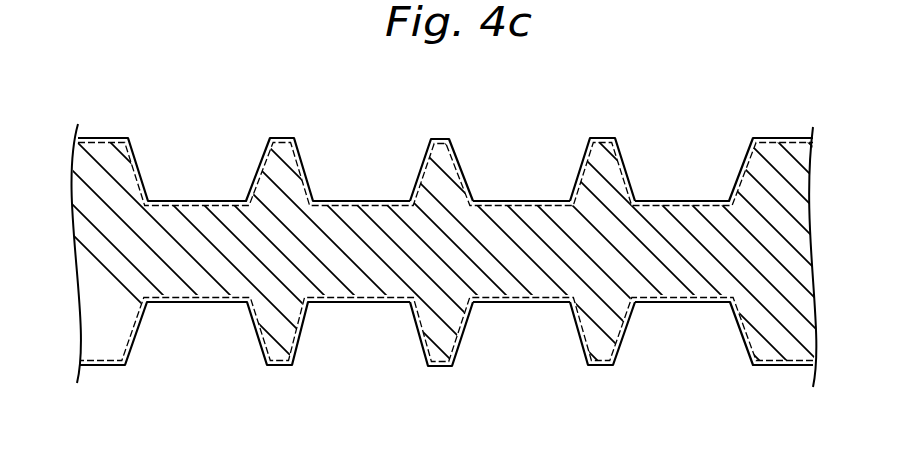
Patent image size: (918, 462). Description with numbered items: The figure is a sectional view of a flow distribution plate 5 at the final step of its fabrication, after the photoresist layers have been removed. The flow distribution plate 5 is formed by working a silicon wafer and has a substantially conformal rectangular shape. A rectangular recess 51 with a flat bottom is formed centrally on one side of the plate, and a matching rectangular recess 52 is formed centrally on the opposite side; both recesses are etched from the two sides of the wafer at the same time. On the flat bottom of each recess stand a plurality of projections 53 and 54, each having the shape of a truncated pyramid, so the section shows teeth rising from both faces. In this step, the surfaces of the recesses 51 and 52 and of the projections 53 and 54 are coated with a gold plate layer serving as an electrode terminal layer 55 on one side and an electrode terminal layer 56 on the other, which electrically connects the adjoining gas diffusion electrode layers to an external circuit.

The flow distribution plate 5 is at (721, 114).
The rectangular recess 51 is at (422, 176).
The rectangular recess 52 is at (302, 332).
The projection 53 is at (613, 180).
The projection 54 is at (612, 328).
The electrode terminal layer 55 is at (446, 141).
The electrode terminal layer 56 is at (432, 367).